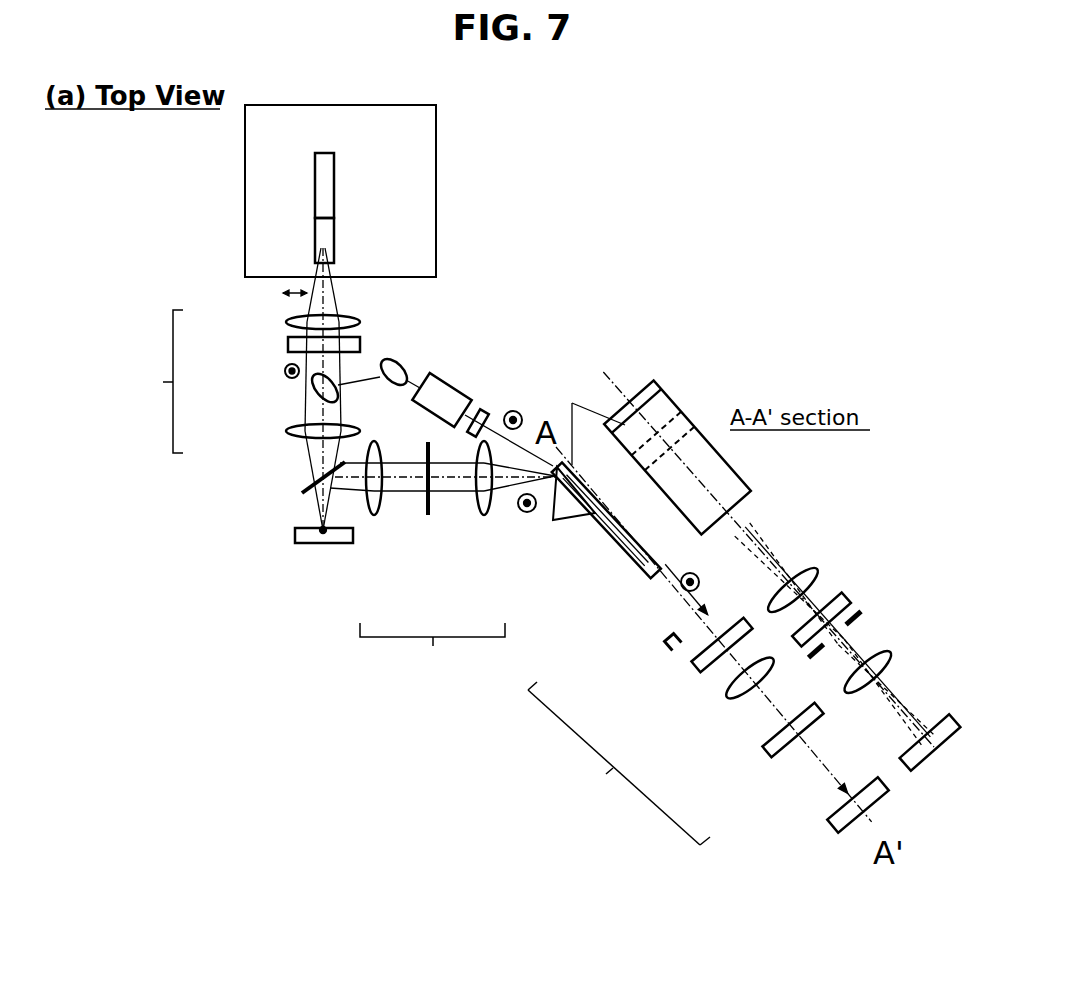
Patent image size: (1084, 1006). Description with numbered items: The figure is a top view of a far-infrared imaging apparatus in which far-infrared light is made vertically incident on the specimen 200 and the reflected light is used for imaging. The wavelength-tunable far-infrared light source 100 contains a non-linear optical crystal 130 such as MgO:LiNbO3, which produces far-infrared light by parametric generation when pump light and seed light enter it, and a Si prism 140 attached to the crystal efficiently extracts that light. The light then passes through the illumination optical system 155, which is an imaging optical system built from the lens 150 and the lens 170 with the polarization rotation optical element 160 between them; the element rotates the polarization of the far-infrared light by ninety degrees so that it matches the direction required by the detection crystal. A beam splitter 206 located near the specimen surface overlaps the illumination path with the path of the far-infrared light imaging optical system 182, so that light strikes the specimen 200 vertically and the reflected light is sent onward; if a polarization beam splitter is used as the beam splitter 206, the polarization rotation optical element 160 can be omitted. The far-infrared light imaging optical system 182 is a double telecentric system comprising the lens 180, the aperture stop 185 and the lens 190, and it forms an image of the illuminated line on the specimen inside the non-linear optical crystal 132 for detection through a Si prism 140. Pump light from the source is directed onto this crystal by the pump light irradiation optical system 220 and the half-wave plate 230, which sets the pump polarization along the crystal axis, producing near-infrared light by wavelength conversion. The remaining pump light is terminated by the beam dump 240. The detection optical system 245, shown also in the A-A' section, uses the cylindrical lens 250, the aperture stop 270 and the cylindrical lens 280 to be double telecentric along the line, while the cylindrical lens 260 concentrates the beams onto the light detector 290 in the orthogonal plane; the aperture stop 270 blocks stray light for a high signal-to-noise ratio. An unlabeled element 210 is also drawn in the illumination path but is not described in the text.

The wavelength-tunable far-infrared light source 100 is at (437, 183).
The non-linear optical crystal 130 is at (313, 178).
The Si prism 140 is at (335, 242).
The lens 150 is at (293, 320).
The illumination optical system 155 is at (145, 381).
The polarization rotation optical element 160 is at (283, 345).
The lens 170 is at (293, 430).
The lens 180 is at (375, 520).
The far-infrared light imaging optical system 182 is at (432, 656).
The aperture stop 185 is at (428, 520).
The lens 190 is at (485, 520).
The specimen 200 is at (296, 541).
The beam splitter 206 is at (302, 493).
The beam splitter 210 is at (300, 388).
The pump light irradiation optical system 220 is at (437, 375).
The half-wave plate 230 is at (487, 412).
The non-linear optical crystal for detection 132 is at (650, 449).
The beam dump 240 is at (665, 645).
The detection optical system 245 is at (619, 763).
The cylindrical lens 250 is at (700, 670).
The cylindrical lens 260 is at (727, 692).
The aperture stop 270 is at (858, 607).
The cylindrical lens 280 is at (770, 748).
The light detector 290 is at (835, 820).